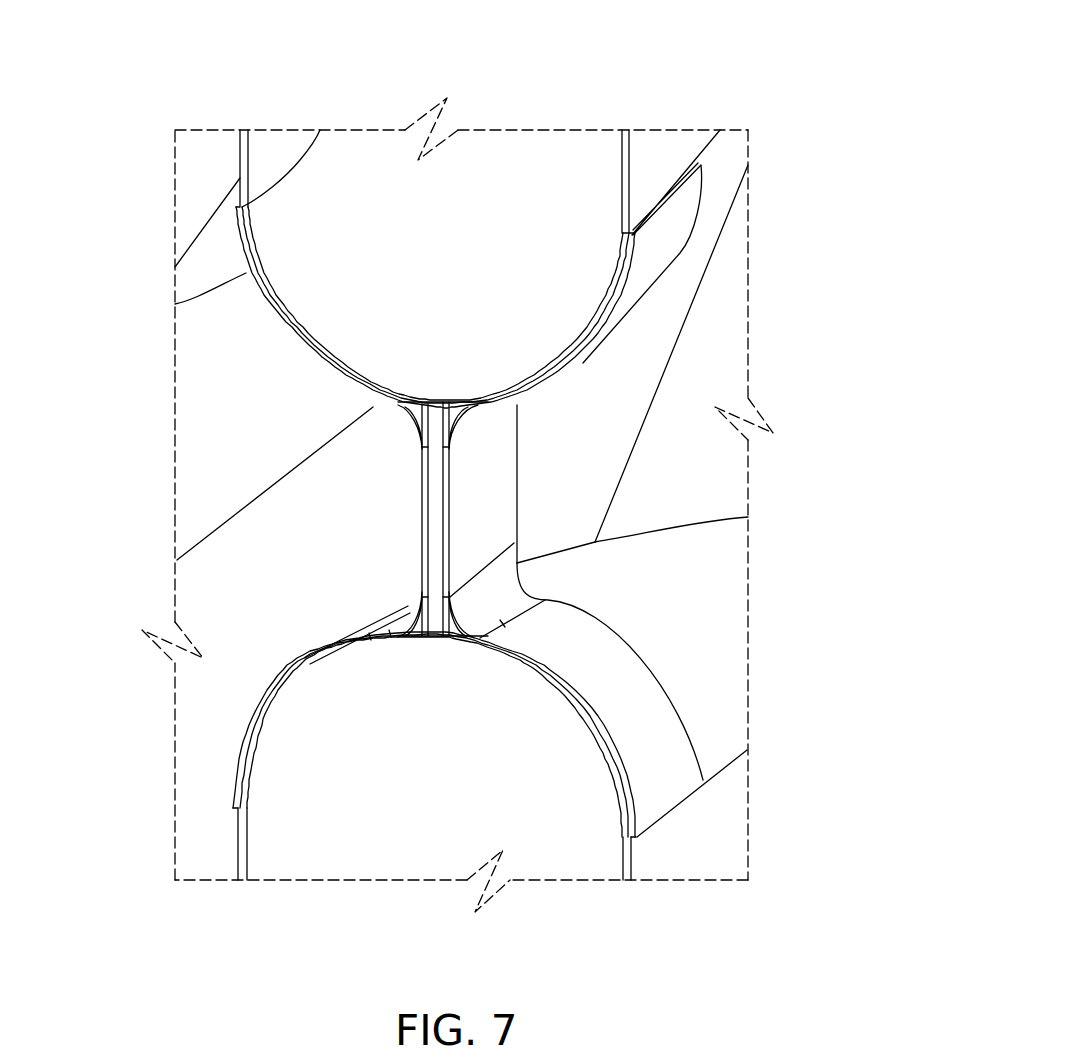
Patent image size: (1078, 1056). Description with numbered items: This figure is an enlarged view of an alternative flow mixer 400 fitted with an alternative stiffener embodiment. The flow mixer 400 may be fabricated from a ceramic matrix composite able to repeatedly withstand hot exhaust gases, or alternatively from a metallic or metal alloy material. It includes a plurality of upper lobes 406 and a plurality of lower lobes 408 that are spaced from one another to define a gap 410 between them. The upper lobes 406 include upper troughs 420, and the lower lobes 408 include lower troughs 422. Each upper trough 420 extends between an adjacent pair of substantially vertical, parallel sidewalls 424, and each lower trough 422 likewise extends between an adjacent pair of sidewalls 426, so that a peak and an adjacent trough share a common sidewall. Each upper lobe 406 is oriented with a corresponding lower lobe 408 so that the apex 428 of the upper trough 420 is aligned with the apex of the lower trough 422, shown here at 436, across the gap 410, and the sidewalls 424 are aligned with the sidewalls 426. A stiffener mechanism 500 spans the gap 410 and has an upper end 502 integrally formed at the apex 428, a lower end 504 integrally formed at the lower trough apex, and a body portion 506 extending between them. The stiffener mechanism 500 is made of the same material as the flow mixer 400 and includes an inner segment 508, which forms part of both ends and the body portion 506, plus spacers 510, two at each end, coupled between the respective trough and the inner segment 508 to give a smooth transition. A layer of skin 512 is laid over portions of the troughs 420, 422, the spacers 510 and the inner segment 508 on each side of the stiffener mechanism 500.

The flow mixer 400 is at (136, 99).
The upper lobes 406 is at (769, 225).
The lower lobes 408 is at (148, 713).
The gap 410 is at (376, 492).
The upper troughs 420 is at (583, 365).
The lower troughs 422 is at (617, 757).
The sidewalls 424 is at (240, 150).
The sidewalls 426 is at (238, 846).
The apex 428 is at (436, 400).
The second plate 436 is at (435, 636).
The stiffener mechanism 500 is at (371, 528).
The upper end 502 is at (462, 433).
The lower end 504 is at (477, 624).
The body portion 506 is at (485, 498).
The inner segment 508 is at (430, 635).
The spacers 510 is at (404, 406).
The skin 512 is at (175, 304).